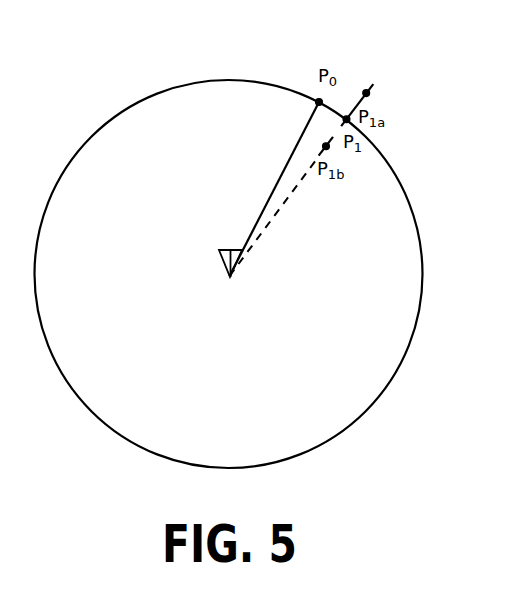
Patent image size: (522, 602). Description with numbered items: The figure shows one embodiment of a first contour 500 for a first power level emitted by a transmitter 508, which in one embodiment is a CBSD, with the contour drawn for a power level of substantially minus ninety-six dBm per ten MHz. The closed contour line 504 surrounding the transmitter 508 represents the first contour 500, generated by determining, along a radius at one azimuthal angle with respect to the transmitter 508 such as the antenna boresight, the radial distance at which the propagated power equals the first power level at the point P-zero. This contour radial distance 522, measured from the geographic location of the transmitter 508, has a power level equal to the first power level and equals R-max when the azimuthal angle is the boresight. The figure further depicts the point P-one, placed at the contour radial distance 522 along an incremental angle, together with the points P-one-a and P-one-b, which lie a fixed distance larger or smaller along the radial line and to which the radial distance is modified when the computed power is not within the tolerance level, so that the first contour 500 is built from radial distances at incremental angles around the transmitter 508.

The first contour 500 is at (209, 36).
The circle / circular path 504 is at (419, 232).
The transmitter 508 is at (221, 250).
The contour radial distance 522 is at (275, 189).